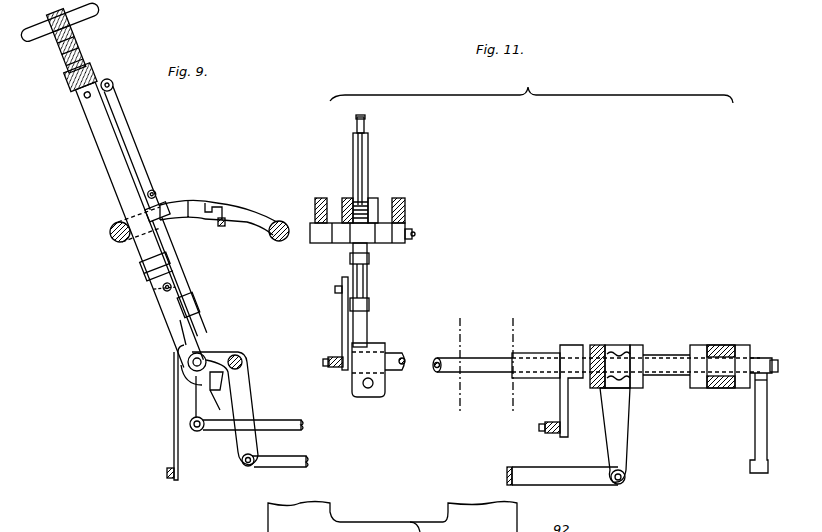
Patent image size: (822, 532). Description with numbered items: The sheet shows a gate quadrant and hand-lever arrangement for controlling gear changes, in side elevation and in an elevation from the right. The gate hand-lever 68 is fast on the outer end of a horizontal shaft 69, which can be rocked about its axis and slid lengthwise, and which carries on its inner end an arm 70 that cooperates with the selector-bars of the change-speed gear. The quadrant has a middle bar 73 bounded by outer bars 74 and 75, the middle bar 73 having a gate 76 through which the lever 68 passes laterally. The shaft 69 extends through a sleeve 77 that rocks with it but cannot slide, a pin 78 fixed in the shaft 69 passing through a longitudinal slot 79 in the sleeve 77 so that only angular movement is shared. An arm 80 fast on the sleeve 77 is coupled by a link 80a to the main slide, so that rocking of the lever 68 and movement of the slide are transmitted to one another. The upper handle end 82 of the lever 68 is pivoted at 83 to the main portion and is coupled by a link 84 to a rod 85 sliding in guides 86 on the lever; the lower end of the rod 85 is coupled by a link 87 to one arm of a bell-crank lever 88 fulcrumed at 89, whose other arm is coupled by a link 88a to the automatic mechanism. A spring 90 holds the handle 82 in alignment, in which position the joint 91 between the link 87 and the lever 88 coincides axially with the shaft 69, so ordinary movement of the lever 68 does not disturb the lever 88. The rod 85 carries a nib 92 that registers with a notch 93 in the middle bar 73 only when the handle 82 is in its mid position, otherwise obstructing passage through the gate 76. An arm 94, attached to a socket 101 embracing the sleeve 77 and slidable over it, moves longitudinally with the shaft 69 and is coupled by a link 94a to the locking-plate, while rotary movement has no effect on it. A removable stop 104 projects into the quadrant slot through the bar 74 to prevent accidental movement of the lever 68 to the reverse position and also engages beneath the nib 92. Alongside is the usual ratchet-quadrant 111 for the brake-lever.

In FIG. 9, the gate hand-lever 68 is at (133, 227).
In FIG. 11, the gate hand-lever 68 is at (369, 148).
In FIG. 11, the horizontal shaft 69 is at (436, 360).
In FIG. 11, the arm 70 is at (757, 421).
In FIG. 9, the middle bar 73 is at (255, 212).
In FIG. 11, the outer bar 74 is at (400, 198).
In FIG. 11, the outer bar 75 is at (348, 198).
In FIG. 9, the gate 76 is at (195, 200).
In FIG. 11, the gate 76 is at (373, 198).
In FIG. 11, the sleeve 77 is at (532, 353).
In FIG. 11, the pin 78 is at (602, 345).
In FIG. 11, the longitudinal slot 79 is at (613, 345).
In FIG. 9, the arm 80 is at (192, 400).
In FIG. 11, the arm 80 is at (570, 414).
In FIG. 9, the link 80a is at (278, 422).
In FIG. 11, the link 80a is at (552, 422).
In FIG. 9, the handle end 82 is at (56, 21).
In FIG. 9, the pivot 83 is at (85, 105).
In FIG. 9, the link 84 is at (135, 141).
In FIG. 11, the link 84 is at (357, 124).
In FIG. 9, the rod 85 is at (179, 276).
In FIG. 11, the rod 85 is at (368, 285).
In FIG. 9, the guides 86 is at (170, 286).
In FIG. 11, the guides 86 is at (370, 259).
In FIG. 9, the link 87 is at (182, 325).
In FIG. 11, the link 87 is at (342, 327).
In FIG. 9, the bell-crank lever 88 is at (247, 390).
In FIG. 11, the bell-crank lever 88 is at (343, 375).
In FIG. 9, the link 88a is at (276, 465).
In FIG. 9, the fulcrum 89 is at (242, 359).
In FIG. 9, the spring 90 is at (28, 6).
In FIG. 9, the joint 91 is at (186, 372).
In FIG. 11, the joint 91 is at (331, 357).
In FIG. 9, the nib 92 is at (154, 204).
In FIG. 9, the notch 93 is at (209, 202).
In FIG. 9, the arm 94 is at (173, 446).
In FIG. 11, the arm 94 is at (630, 433).
In FIG. 9, the link 94a is at (167, 482).
In FIG. 11, the link 94a is at (568, 478).
In FIG. 11, the socket 101 is at (638, 345).
In FIG. 9, the removable stop 104 is at (224, 226).
In FIG. 11, the ratchet-quadrant 111 is at (320, 198).